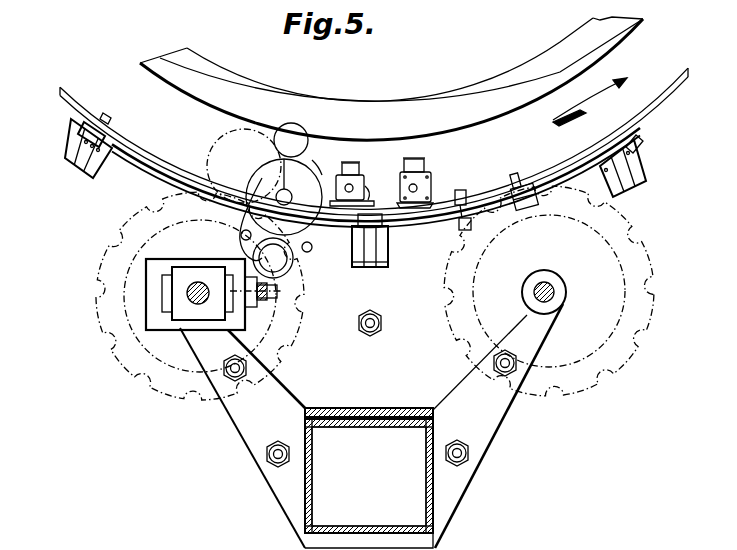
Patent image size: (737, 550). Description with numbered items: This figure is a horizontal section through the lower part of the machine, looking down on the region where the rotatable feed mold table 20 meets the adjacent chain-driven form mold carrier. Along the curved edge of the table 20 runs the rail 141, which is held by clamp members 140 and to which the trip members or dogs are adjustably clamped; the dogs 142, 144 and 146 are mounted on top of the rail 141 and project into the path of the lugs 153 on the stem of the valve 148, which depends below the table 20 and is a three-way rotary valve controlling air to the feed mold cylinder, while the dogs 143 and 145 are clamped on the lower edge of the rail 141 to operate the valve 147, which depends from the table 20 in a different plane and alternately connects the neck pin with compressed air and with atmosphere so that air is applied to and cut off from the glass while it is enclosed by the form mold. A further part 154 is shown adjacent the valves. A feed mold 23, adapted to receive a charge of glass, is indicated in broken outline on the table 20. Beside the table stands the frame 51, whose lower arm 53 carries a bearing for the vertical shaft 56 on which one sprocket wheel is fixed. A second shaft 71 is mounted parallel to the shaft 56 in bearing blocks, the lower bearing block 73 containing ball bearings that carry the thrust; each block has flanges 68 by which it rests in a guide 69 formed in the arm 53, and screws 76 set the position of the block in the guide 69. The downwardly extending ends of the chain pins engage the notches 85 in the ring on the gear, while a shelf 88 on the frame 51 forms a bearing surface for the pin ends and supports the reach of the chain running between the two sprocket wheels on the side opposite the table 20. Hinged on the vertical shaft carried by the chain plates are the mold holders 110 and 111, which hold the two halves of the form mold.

The feed mold table 20 is at (640, 117).
The feed mold 23 is at (240, 152).
The frame 51 is at (437, 498).
The lower arm 53 is at (490, 417).
The vertical shaft 56 is at (558, 293).
The flanges 68 is at (180, 318).
The guide 69 is at (152, 262).
The second shaft 71 is at (200, 267).
The lower bearing block 73 is at (180, 303).
The screws 76 is at (265, 318).
The notches 85 is at (645, 290).
The shelf 88 is at (397, 410).
The mold holder 110 is at (380, 121).
The mold holder 111 is at (233, 128).
The clamp bracket 140 is at (75, 156).
The rail 141 is at (158, 170).
The trip member 142 is at (107, 115).
The trip member 143 is at (300, 248).
The trip member 144 is at (366, 267).
The trip member 145 is at (456, 191).
The trip member 146 is at (518, 177).
The valve 147 is at (364, 171).
The valve 148 is at (426, 168).
The lugs 153 is at (270, 182).
The roller arm 154 is at (308, 166).